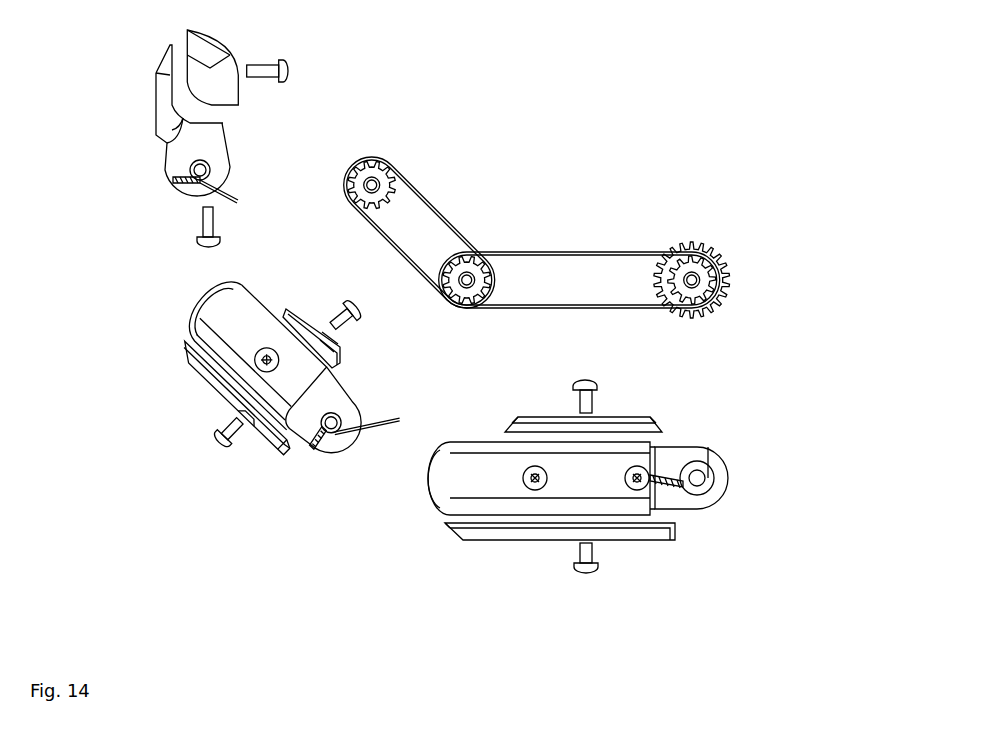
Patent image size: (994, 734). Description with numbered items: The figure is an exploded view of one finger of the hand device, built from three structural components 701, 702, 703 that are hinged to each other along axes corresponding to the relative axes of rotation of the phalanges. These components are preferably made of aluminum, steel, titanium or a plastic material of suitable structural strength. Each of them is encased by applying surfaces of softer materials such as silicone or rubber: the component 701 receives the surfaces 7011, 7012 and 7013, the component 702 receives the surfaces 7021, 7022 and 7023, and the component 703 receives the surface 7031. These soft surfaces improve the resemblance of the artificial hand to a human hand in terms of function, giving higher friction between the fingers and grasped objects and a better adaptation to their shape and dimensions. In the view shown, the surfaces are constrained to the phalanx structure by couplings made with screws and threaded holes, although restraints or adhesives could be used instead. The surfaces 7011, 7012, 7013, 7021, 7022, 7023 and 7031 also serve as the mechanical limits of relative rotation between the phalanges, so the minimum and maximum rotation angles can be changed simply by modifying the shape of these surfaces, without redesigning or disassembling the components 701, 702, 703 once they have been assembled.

The finger component 701 is at (607, 502).
The soft encasing surface 7011 is at (670, 415).
The soft encasing surface 7012 is at (533, 552).
The soft encasing surface 7013 is at (438, 495).
The finger component 702 is at (228, 453).
The soft encasing surface 7021 is at (331, 423).
The soft encasing surface 7022 is at (222, 410).
The soft encasing surface 7023 is at (197, 304).
The finger component 703 is at (145, 128).
The soft encasing surface 7031 is at (174, 30).